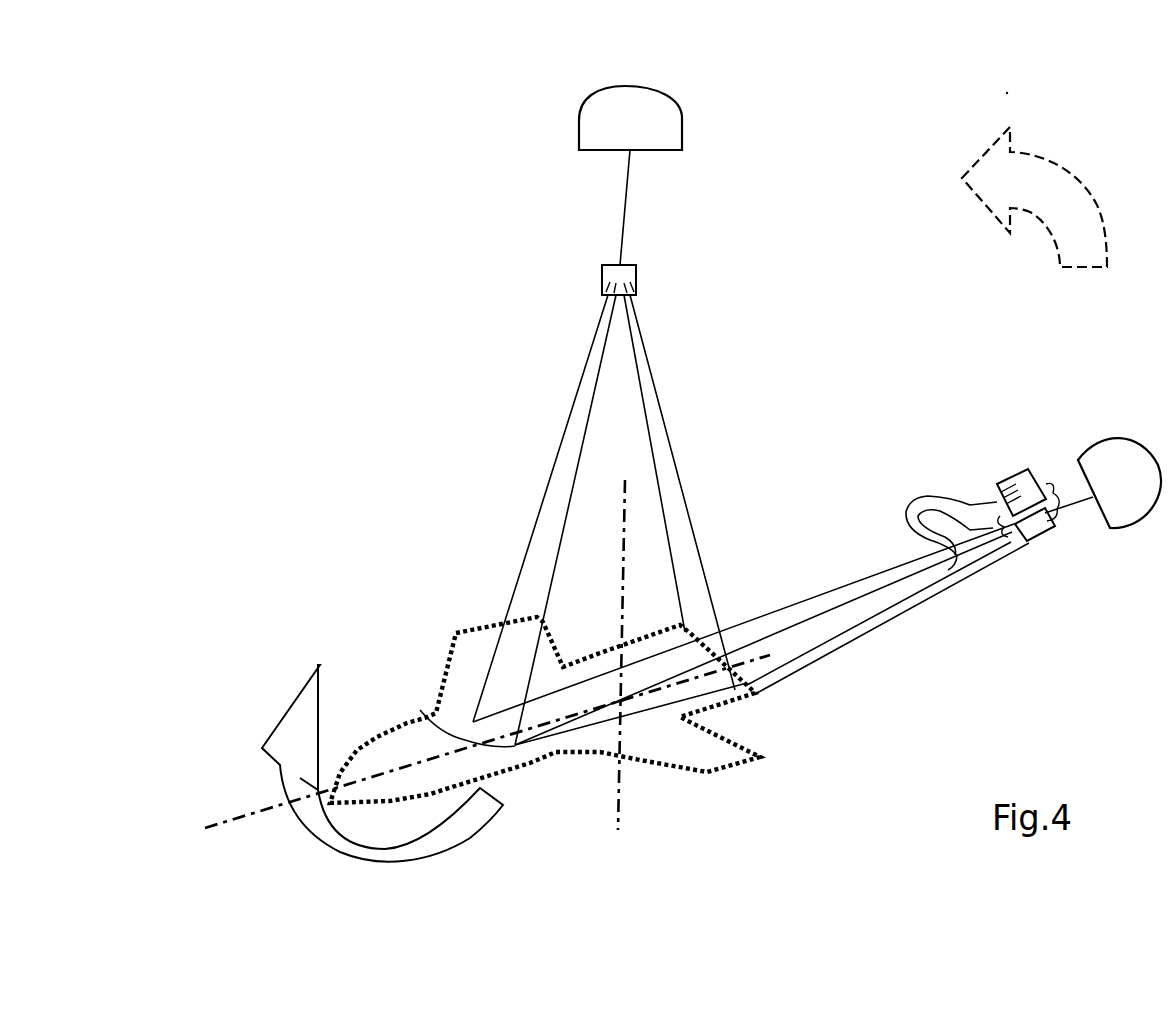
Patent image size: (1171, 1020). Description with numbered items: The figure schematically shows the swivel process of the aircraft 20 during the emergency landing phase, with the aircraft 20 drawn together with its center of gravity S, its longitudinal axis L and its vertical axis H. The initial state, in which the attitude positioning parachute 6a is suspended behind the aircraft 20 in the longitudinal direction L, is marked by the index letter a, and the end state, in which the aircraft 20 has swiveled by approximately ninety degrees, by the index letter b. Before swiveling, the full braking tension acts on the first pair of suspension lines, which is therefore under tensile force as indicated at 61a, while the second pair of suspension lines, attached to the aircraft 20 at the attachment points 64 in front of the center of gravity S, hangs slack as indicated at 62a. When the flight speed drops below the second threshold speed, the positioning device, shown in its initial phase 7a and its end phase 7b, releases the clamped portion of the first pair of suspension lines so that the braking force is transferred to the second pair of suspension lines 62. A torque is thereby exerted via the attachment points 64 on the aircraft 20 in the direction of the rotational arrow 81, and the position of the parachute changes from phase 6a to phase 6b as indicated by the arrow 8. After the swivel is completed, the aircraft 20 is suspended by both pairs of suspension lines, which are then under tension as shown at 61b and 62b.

The attitude positioning parachute in initial phase 6a is at (1122, 467).
The attitude positioning parachute in end phase 6b is at (584, 130).
The positioning device in initial phase 7a is at (1040, 530).
The positioning device in end phase 7b is at (1020, 490).
The rotational arrow 8 is at (1060, 197).
The aircraft 20 is at (735, 745).
The first pair of suspension lines under tension 61a is at (843, 578).
The first pair of suspension lines in end phase 61b is at (658, 488).
The second pair of suspension lines 62 is at (575, 700).
The second pair of suspension lines in slack state 62a is at (913, 499).
The second pair of suspension lines in end phase 62b is at (571, 482).
The attachment points 64 is at (422, 712).
The rotational arrow 81 is at (297, 727).
The vertical axis H is at (606, 548).
The longitudinal axis L is at (212, 828).
The center of gravity S is at (620, 706).